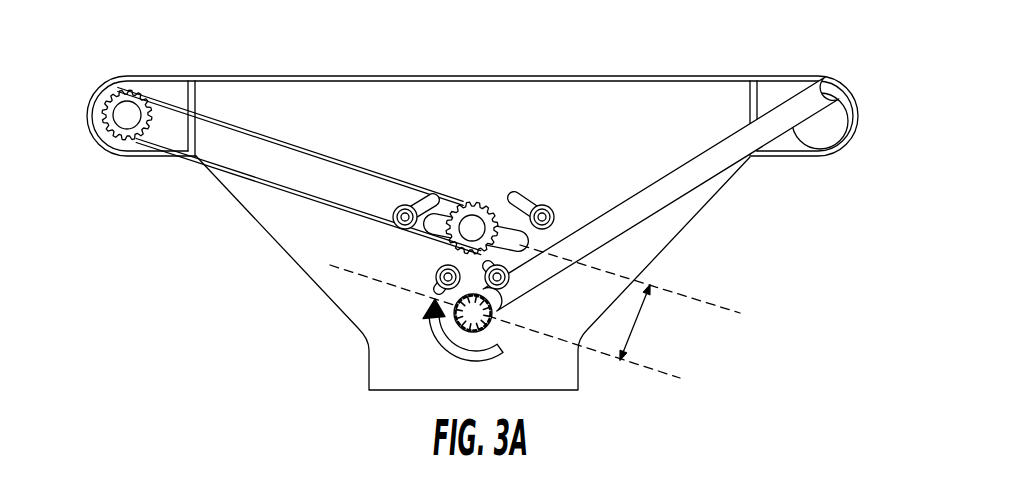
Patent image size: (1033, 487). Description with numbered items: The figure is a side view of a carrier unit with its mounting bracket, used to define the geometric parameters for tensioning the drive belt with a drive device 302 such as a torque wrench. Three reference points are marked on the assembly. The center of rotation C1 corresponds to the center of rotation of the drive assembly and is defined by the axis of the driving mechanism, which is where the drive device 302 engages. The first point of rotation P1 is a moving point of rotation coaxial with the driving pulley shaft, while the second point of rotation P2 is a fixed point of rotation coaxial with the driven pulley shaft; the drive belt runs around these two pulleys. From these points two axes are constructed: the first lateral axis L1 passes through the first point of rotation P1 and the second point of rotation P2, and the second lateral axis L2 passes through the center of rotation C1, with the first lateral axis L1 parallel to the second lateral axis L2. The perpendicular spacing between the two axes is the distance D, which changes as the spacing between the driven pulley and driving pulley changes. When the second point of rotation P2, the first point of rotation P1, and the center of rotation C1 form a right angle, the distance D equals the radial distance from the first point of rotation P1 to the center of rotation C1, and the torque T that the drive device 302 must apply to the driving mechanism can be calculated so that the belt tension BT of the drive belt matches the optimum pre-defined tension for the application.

The first point of rotation P1 is at (472, 228).
The second point of rotation P2 is at (127, 115).
The belt tension BT is at (295, 123).
The drive device 302 is at (717, 160).
The first lateral axis L1 is at (668, 292).
The second lateral axis L2 is at (662, 375).
The distance D is at (636, 322).
The torque T is at (459, 335).
The center of rotation C1 is at (473, 313).